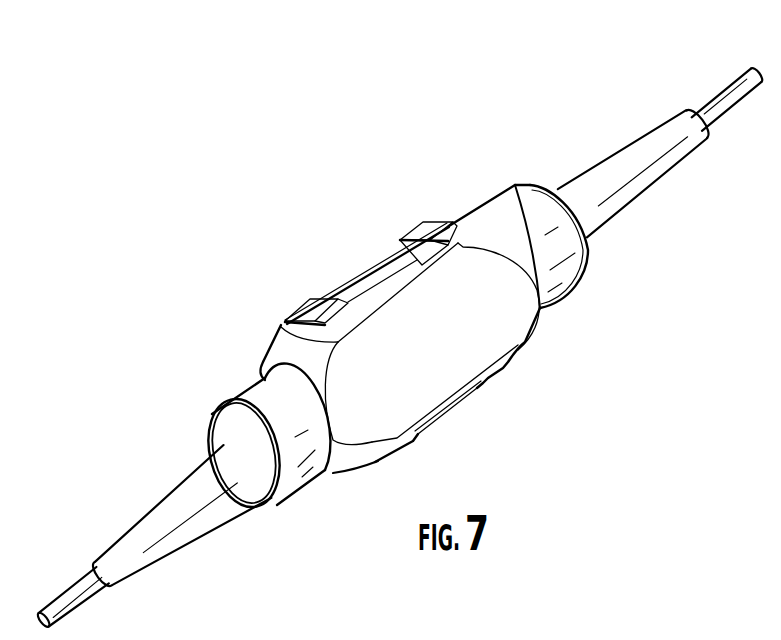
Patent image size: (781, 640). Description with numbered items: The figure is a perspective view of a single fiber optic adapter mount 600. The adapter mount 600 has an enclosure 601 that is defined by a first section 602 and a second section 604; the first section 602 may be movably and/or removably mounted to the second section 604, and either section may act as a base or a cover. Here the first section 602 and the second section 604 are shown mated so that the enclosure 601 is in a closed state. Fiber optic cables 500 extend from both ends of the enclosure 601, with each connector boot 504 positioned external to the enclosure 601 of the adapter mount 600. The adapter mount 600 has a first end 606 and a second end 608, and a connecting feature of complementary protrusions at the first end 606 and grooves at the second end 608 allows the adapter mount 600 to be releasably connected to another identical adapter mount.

The fiber optic cables 500 is at (74, 582).
The connector boot 504 is at (171, 480).
The adapter mount 600 is at (482, 408).
The enclosure 601 is at (558, 297).
The first section 602 is at (367, 270).
The second section 604 is at (378, 468).
The first end 606 is at (241, 378).
The second end 608 is at (480, 215).